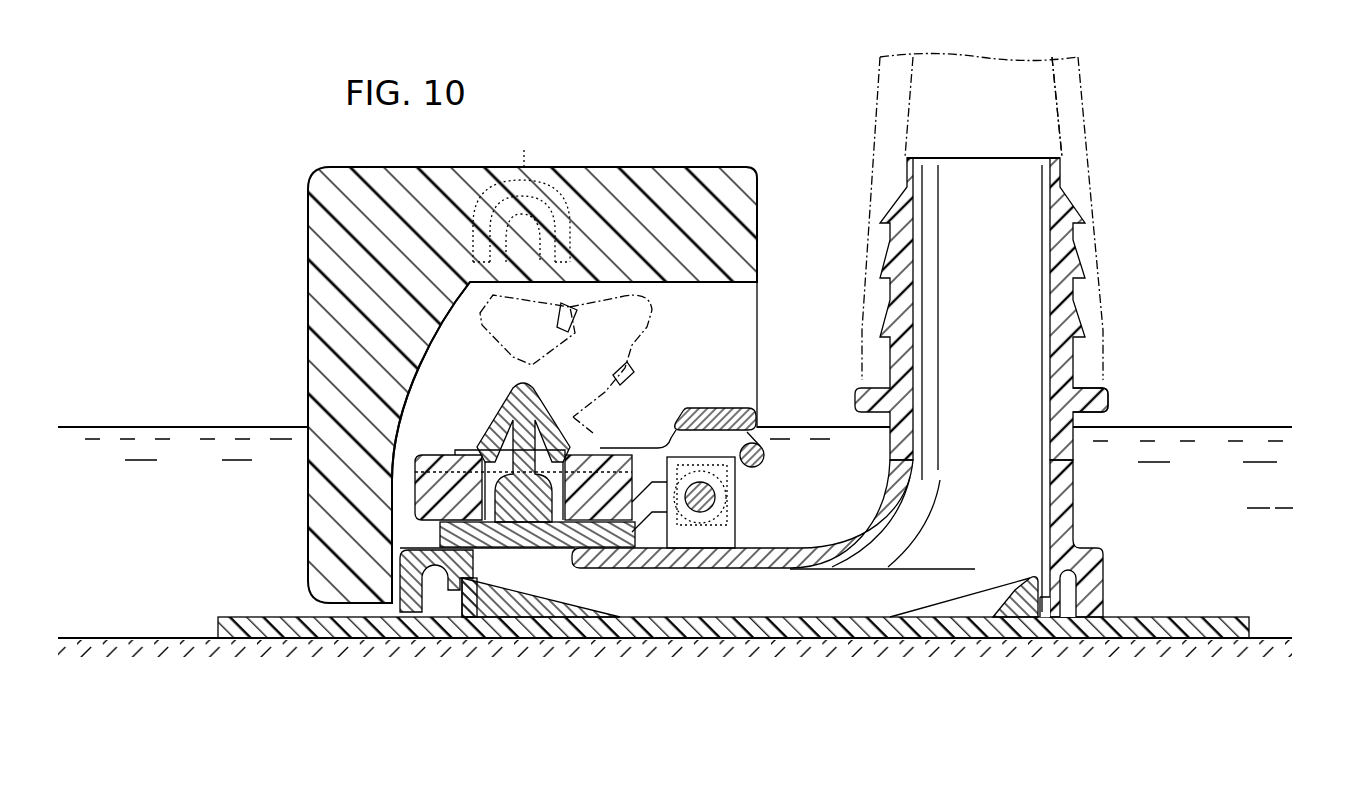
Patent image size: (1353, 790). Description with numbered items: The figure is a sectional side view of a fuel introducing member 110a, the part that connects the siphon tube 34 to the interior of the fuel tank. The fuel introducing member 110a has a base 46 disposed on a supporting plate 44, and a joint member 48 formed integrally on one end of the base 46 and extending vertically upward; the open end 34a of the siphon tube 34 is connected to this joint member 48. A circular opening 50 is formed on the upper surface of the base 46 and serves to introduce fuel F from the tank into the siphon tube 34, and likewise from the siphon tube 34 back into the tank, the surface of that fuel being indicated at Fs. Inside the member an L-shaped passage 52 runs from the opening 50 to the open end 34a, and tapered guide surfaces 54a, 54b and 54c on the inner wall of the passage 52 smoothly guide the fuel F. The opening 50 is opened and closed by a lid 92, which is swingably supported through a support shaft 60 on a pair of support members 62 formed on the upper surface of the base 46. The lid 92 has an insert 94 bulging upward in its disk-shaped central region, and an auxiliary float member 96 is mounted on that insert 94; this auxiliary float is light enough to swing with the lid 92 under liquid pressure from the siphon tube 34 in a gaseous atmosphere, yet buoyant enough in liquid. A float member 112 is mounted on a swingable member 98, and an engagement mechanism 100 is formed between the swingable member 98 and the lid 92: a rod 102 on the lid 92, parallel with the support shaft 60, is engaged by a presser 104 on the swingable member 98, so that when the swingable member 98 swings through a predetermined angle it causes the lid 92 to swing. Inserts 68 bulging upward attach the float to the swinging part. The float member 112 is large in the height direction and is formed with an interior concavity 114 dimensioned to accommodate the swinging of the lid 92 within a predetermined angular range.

The fuel introducing member 110a is at (588, 113).
The siphon tube 34 is at (1088, 110).
The open end 34a is at (1080, 152).
The supporting plate 44 is at (1157, 617).
The base 46 is at (400, 596).
The joint member 48 is at (1065, 362).
The opening 50 is at (492, 587).
The passage 52 is at (1000, 465).
The tapered guide surface 54a is at (525, 582).
The tapered guide surface 54b is at (940, 590).
The tapered guide surface 54c is at (878, 518).
The support shaft 60 is at (718, 492).
The support member 62 is at (712, 538).
The insert 68 is at (521, 193).
The lid 92 is at (440, 534).
The insert 94 is at (505, 410).
The auxiliary float member 96 is at (432, 478).
The swingable member 98 is at (648, 448).
The engagement mechanism 100 is at (779, 401).
The rod 102 is at (756, 445).
The presser 104 is at (707, 408).
The float member 112 is at (348, 205).
The concavity 114 is at (413, 372).
The fuel F is at (98, 448).
The fuel surface Fs is at (180, 428).